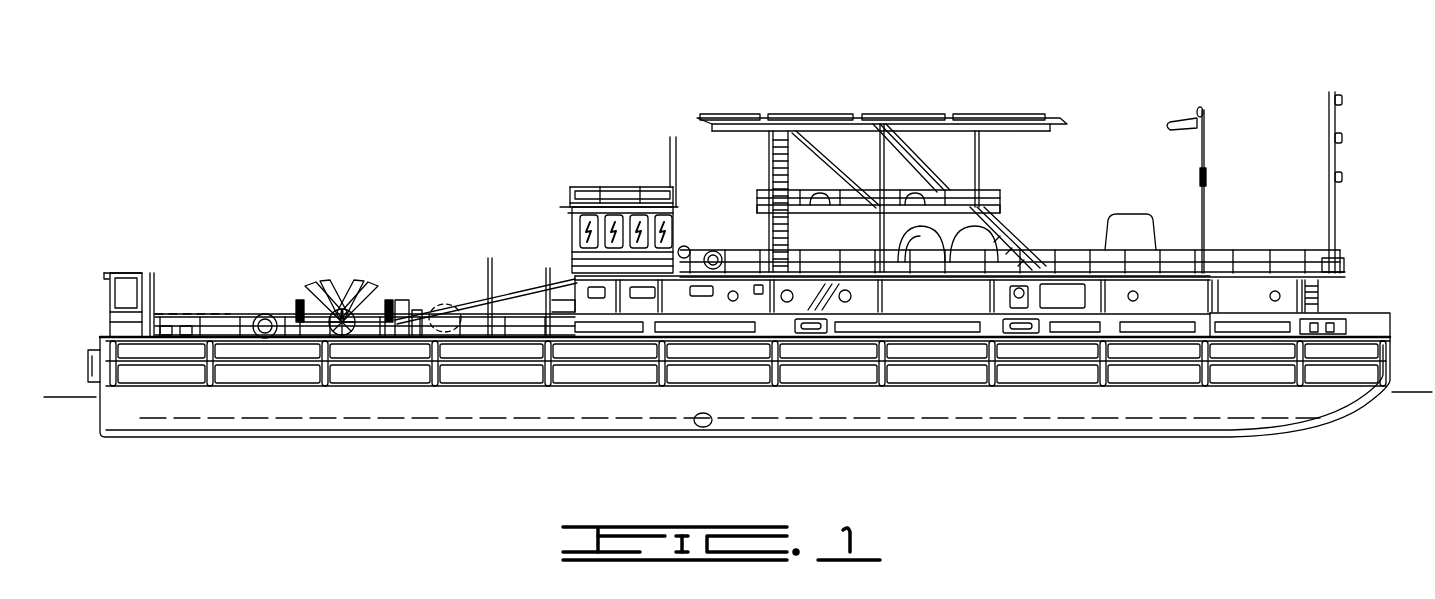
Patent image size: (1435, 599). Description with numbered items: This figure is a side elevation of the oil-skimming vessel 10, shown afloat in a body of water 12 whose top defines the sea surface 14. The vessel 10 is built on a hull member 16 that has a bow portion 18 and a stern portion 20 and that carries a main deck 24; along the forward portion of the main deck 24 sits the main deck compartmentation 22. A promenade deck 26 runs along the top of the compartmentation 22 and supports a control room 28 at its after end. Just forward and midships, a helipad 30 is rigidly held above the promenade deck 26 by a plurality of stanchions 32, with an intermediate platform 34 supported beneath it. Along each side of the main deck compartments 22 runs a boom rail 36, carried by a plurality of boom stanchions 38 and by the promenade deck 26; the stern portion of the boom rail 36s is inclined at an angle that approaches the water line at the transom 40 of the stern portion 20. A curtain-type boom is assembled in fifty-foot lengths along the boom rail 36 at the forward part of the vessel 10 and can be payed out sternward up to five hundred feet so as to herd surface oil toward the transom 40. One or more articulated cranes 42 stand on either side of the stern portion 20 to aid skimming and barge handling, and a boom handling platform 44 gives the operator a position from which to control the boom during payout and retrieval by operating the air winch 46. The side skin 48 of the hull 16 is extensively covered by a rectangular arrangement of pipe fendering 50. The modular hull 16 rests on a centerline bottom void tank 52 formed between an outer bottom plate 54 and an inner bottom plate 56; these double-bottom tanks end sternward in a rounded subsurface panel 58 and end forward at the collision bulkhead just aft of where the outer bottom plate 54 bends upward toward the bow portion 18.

The vessel 10 is at (950, 79).
The body of water 12 is at (1048, 483).
The sea surface 14 is at (78, 398).
The hull member 16 is at (1392, 352).
The bow portion 18 is at (1372, 285).
The stern portion 20 is at (225, 292).
The main deck compartmentation 22 is at (1052, 284).
The main deck 24 is at (212, 312).
The promenade deck 26 is at (1018, 272).
The control room 28 is at (625, 205).
The helipad 30 is at (805, 118).
The stanchions 32 is at (880, 160).
The intermediate platform 34 is at (864, 213).
The boom rail 36 is at (949, 285).
The stern portion of the boom rail 36s is at (502, 292).
The boom stanchions 38 is at (568, 305).
The transom 40 is at (86, 372).
The articulated cranes 42 is at (348, 296).
The boom handling platform 44 is at (116, 304).
The air winch 46 is at (315, 304).
The side skin 48 is at (272, 378).
The pipe fendering 50 is at (297, 385).
The centerline bottom void tank 52 is at (968, 418).
The outer bottom plate 54 is at (541, 433).
The inner bottom plate 56 is at (366, 422).
The rounded subsurface panel 58 is at (143, 433).